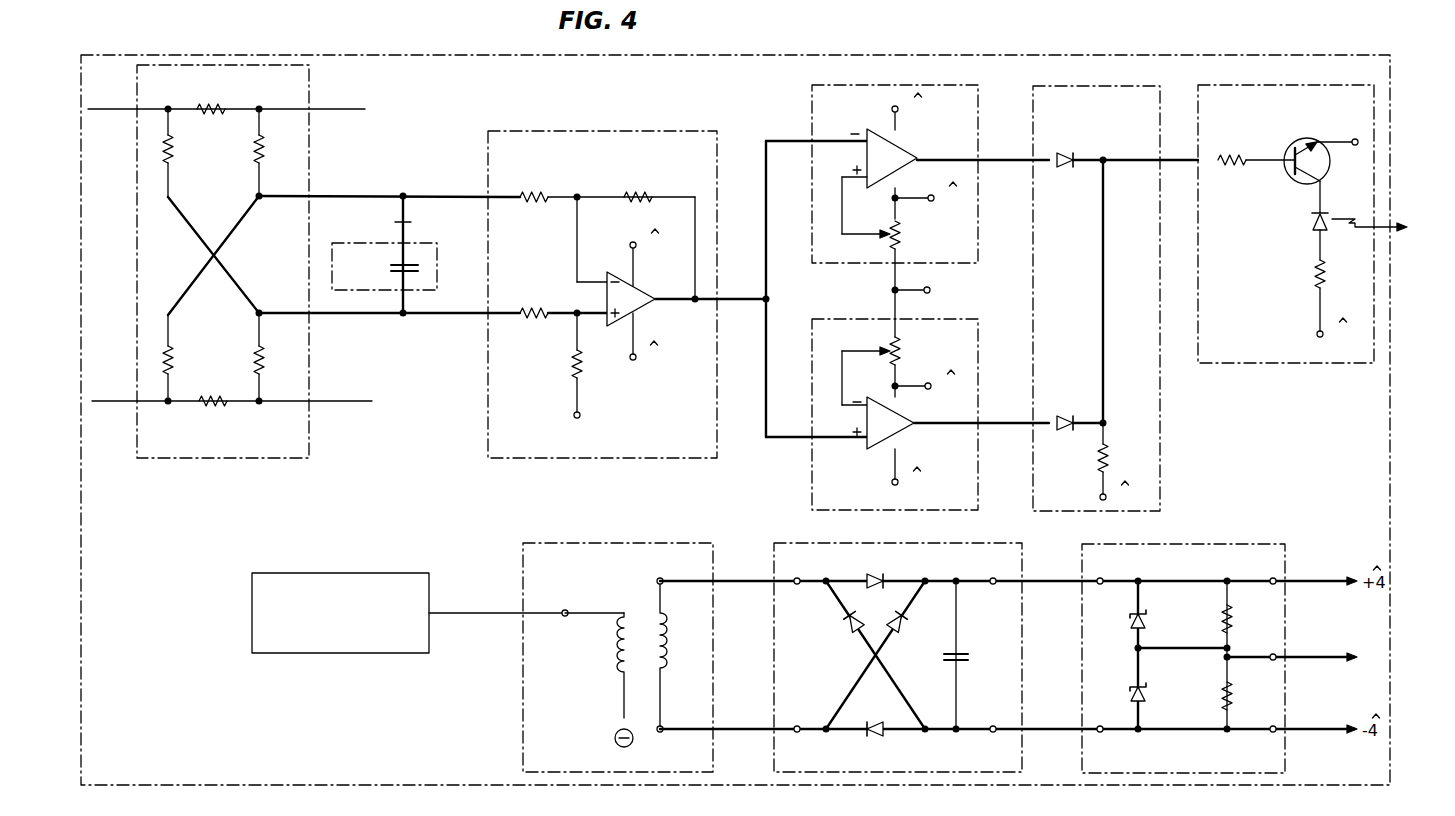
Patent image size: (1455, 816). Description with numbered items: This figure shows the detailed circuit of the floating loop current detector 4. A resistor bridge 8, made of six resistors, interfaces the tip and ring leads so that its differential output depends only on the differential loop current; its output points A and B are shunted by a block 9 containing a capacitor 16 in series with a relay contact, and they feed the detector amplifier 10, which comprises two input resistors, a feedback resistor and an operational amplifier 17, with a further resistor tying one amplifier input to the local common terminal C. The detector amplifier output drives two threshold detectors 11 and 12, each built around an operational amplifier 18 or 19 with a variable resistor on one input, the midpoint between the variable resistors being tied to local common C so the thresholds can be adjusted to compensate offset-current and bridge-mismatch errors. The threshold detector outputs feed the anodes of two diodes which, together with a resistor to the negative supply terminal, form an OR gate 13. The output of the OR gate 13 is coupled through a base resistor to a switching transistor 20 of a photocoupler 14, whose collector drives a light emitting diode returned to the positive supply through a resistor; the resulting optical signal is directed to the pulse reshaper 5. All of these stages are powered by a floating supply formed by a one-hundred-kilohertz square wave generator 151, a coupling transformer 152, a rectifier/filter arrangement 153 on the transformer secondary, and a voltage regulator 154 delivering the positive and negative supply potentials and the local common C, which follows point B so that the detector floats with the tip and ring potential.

The floating loop current detector 4 is at (795, 81).
The pulse reshaper 5 is at (1391, 225).
The resistor bridge 8 is at (233, 446).
The signal coupling device block 9 is at (389, 254).
The detector amplifier 10 is at (627, 317).
The threshold detector 11 is at (869, 414).
The threshold detector 12 is at (915, 211).
The OR gate 13 is at (1140, 131).
The photocoupler 14 is at (1272, 243).
The capacitor 16 is at (391, 269).
The operational amplifier 17 is at (634, 302).
The operational amplifier 18 is at (882, 440).
The operational amplifier 19 is at (898, 157).
The switching transistor 20 is at (1304, 152).
The 100 KHz square wave generator 151 is at (340, 649).
The coupling transformer 152 is at (535, 698).
The rectifier/filter arrangement 153 is at (894, 563).
The voltage regulator 154 is at (1233, 558).